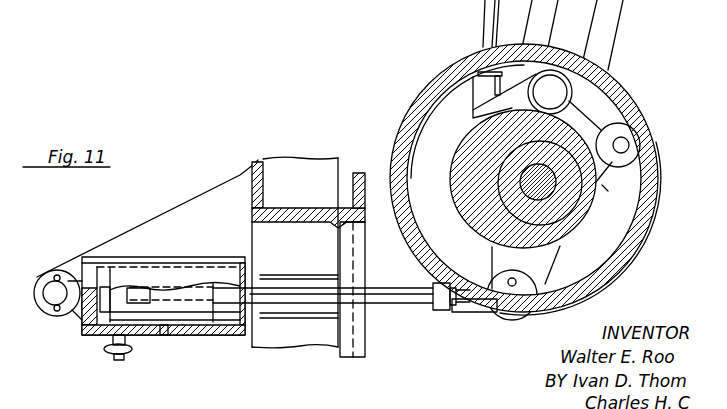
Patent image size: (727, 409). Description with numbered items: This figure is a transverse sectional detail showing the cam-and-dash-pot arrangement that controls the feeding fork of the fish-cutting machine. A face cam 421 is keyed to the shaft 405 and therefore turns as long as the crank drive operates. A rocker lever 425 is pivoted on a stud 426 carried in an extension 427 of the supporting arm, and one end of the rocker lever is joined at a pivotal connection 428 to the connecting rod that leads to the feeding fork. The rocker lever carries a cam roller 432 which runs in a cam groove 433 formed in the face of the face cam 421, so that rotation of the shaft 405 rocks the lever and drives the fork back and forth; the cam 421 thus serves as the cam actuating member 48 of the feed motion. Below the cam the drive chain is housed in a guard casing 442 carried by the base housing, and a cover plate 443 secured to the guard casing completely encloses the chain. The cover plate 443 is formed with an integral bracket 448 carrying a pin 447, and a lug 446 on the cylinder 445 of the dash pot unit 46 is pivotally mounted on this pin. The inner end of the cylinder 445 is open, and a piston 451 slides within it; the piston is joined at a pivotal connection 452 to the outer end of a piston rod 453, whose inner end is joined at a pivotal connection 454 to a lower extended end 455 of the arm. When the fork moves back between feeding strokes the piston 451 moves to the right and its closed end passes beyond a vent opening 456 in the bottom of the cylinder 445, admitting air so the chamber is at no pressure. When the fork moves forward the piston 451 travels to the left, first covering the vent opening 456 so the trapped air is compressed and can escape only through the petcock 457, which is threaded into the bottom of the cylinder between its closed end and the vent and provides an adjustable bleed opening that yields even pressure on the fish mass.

The face cam 421 is at (619, 93).
The rocker lever 425 is at (607, 117).
The stud 426 is at (630, 145).
The extension 427 is at (606, 189).
The pivotal connection 428 is at (474, 117).
The cam roller 432 is at (558, 98).
The cam groove 433 is at (439, 217).
The shaft 405 is at (543, 190).
The lower extended end 455 is at (526, 267).
The pivotal connection 454 is at (546, 273).
The cam actuating member 48 is at (655, 220).
The cover plate 443 is at (256, 161).
The guard casing 442 is at (362, 210).
The bracket 448 is at (173, 228).
The pivotal connection 452 is at (146, 292).
The dash pot unit 46 is at (220, 272).
The pin 447 is at (53, 290).
The lug 446 is at (78, 316).
The petcock 457 is at (115, 351).
The vent opening 456 is at (165, 336).
The piston 451 is at (198, 313).
The cylinder 445 is at (234, 338).
The piston rod 453 is at (403, 304).